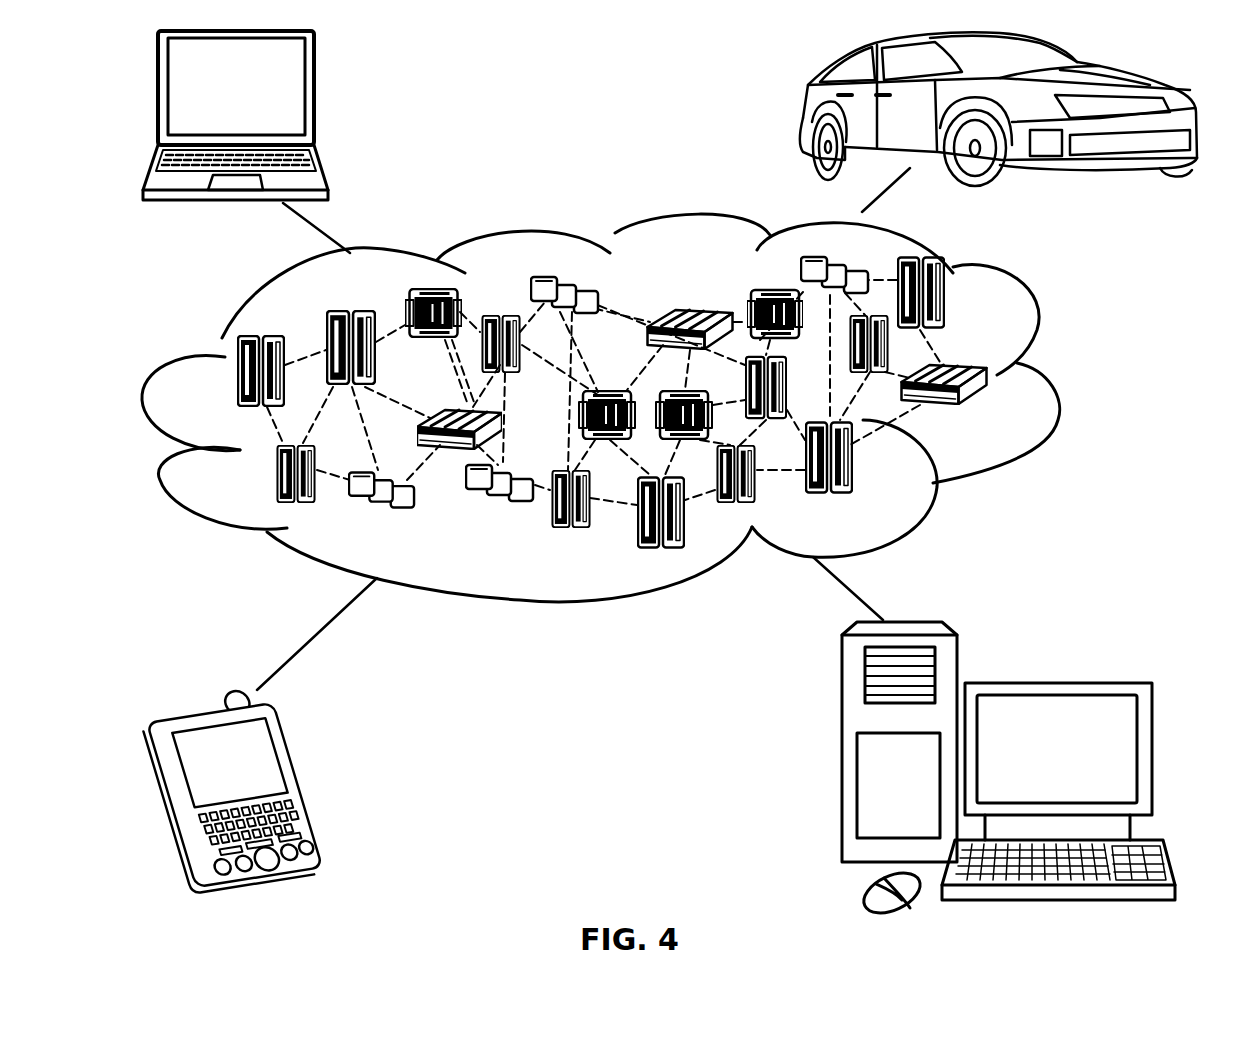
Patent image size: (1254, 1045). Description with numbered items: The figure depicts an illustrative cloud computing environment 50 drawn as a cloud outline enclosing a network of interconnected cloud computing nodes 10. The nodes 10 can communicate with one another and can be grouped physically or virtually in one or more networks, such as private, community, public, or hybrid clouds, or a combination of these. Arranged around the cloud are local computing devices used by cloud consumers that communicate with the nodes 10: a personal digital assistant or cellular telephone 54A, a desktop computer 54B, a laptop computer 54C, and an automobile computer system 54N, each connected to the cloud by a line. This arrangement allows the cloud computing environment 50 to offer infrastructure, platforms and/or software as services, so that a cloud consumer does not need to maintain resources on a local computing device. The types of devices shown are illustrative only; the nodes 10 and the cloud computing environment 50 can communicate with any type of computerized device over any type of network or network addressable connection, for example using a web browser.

The personal digital assistant (PDA) or cellular telephone 54A is at (303, 778).
The desktop computer 54B is at (1055, 683).
The laptop computer 54C is at (314, 96).
The automobile computer system 54N is at (800, 110).
The cloud computing environment 50 is at (1057, 386).
The cloud computing nodes 10 is at (1000, 414).